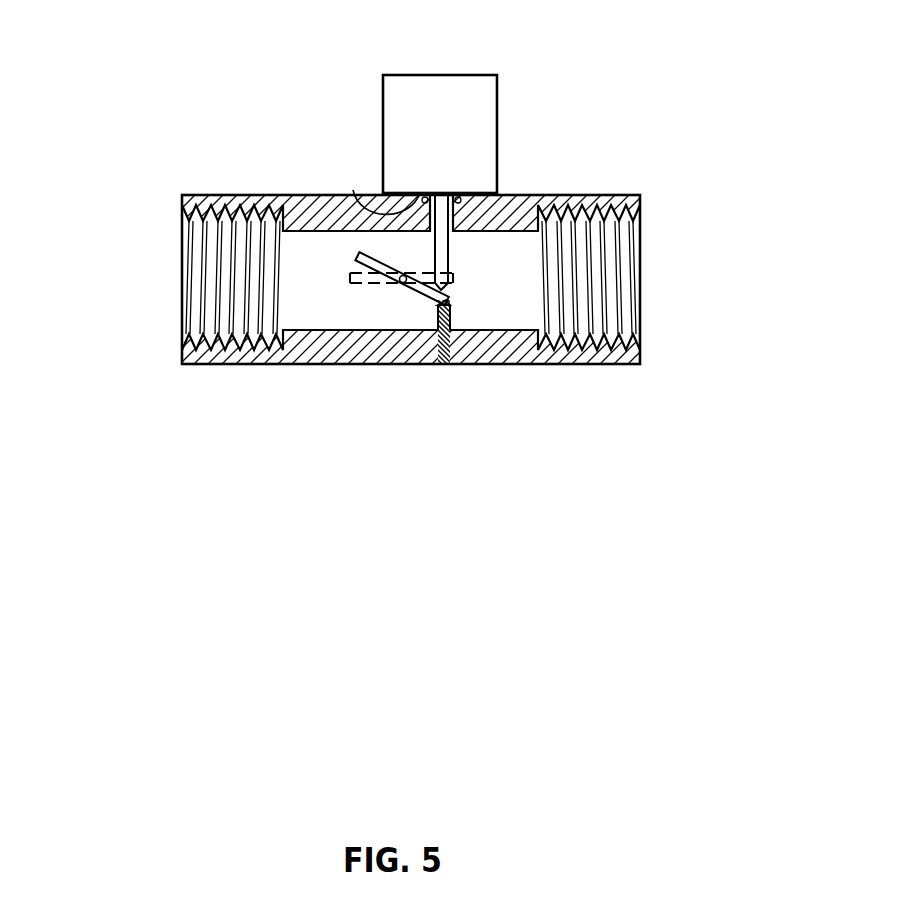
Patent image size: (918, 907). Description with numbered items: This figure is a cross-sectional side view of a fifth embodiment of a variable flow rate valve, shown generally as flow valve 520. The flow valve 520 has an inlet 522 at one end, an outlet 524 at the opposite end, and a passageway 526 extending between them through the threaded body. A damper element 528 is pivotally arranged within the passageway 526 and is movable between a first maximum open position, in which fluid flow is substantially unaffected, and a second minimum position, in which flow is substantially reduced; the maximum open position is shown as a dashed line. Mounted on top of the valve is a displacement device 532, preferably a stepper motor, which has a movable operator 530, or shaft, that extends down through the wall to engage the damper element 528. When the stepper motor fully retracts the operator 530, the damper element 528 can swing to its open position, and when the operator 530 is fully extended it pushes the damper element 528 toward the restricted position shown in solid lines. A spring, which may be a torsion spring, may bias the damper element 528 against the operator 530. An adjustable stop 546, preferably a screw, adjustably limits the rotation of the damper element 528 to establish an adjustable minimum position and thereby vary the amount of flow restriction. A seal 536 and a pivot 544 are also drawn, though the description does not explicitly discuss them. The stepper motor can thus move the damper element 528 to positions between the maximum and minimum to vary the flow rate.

The flow valve 520 is at (206, 89).
The inlet 522 is at (158, 276).
The outlet 524 is at (655, 280).
The passageway 526 is at (315, 323).
The damper element 528 is at (453, 300).
The operator 530 is at (497, 122).
The displacement device 532 is at (442, 246).
The seal 536 is at (353, 190).
The valve flapper 544 is at (401, 284).
The adjustable stop 546 is at (444, 303).